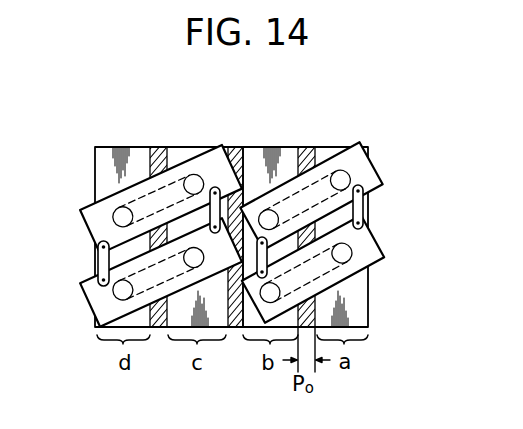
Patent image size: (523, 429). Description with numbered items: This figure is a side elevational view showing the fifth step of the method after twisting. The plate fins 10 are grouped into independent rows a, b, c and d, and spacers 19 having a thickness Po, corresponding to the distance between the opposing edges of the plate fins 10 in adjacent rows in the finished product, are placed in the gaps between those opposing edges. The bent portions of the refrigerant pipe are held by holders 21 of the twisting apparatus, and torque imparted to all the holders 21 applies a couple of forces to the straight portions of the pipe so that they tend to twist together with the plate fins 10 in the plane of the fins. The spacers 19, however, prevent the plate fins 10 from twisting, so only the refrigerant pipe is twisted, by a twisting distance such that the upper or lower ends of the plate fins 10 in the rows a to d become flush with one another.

The plate fins 10 is at (268, 146).
The spacers 19 is at (233, 147).
The holders 21 is at (369, 176).